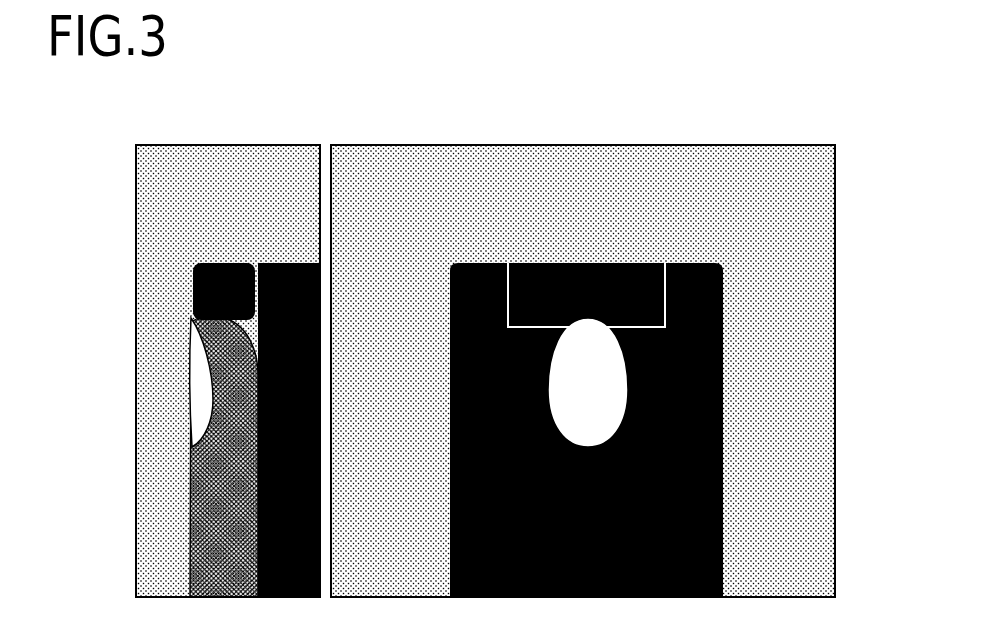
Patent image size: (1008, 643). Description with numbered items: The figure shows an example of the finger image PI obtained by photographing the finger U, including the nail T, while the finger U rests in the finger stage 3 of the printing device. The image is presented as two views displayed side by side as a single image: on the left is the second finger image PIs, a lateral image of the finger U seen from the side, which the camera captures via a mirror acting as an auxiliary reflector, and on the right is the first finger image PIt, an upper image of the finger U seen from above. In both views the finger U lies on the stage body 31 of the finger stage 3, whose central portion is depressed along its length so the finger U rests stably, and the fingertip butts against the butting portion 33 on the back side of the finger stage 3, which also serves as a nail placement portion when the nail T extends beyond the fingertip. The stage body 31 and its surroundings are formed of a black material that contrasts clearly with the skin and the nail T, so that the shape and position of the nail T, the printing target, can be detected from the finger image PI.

The finger stage 3 is at (172, 280).
The stage body 31 is at (283, 272).
The butting portion 33 is at (217, 285).
The nail T is at (200, 385).
The finger U is at (198, 507).
The finger image PI is at (472, 338).
The second finger image PIs is at (227, 133).
The first finger image PIt is at (647, 132).